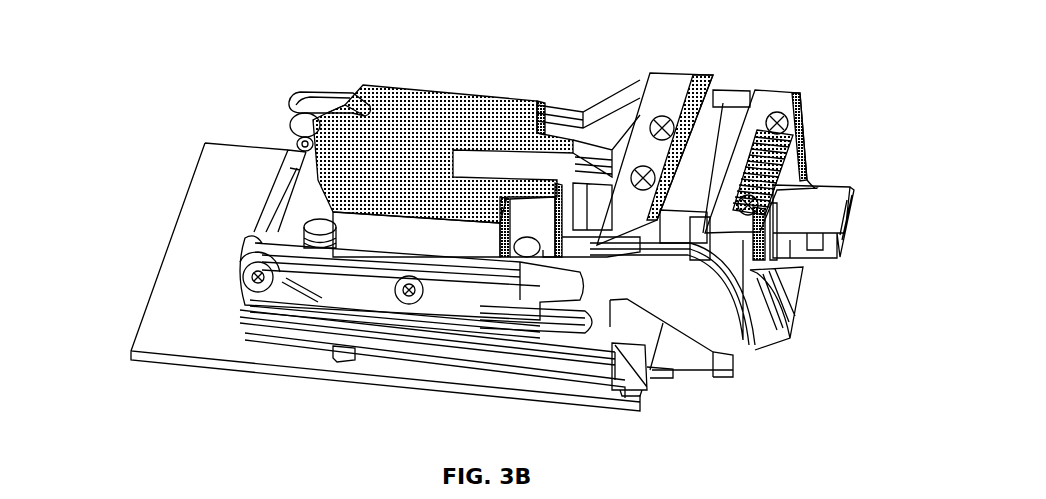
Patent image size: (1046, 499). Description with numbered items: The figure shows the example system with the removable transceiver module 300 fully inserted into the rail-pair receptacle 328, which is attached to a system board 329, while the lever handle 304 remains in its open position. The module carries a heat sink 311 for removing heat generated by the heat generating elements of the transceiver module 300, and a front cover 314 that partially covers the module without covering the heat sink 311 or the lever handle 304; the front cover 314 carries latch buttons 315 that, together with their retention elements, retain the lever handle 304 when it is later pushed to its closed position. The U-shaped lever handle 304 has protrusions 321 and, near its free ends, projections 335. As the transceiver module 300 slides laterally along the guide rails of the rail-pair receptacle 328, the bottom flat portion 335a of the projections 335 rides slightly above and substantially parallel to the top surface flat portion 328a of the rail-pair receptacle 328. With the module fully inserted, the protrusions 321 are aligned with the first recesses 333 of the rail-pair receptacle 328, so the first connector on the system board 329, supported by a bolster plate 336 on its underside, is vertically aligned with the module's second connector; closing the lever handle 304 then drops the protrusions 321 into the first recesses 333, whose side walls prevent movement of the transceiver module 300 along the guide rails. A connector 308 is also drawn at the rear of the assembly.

The removable transceiver module 300 is at (546, 92).
The lever handle 304 is at (811, 304).
The electrical connector 308 is at (828, 198).
The heat sink 311 is at (472, 118).
The front cover 314 is at (782, 92).
The latch buttons 315 is at (730, 87).
The protrusions 321 is at (597, 320).
The rail-pair receptacle 328 is at (413, 350).
The top surface flat portion 328a is at (463, 332).
The system board 329 is at (181, 230).
The first recesses 333 is at (615, 347).
The projections 335 is at (322, 306).
The bottom flat portion 335a is at (283, 314).
The bolster plate 336 is at (343, 384).